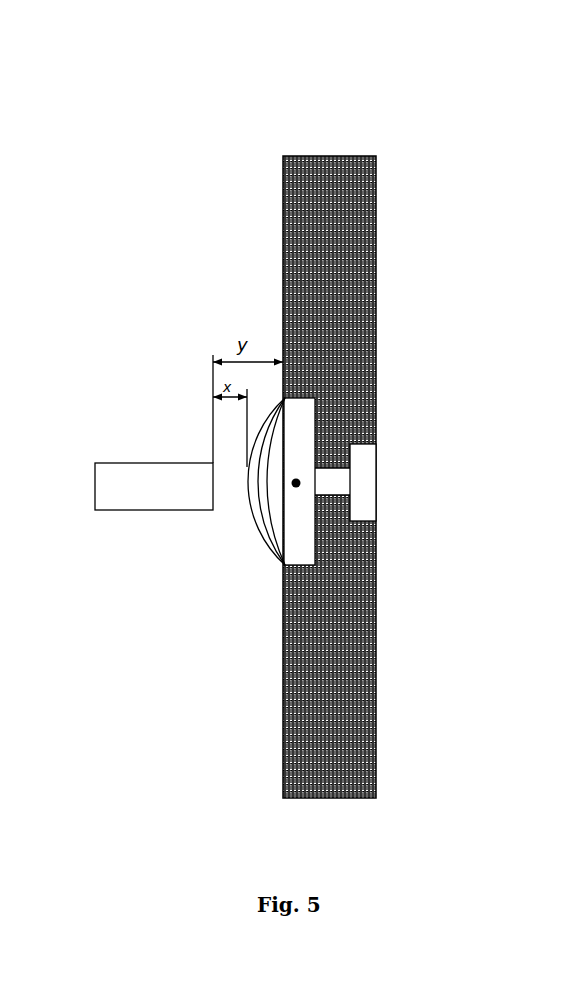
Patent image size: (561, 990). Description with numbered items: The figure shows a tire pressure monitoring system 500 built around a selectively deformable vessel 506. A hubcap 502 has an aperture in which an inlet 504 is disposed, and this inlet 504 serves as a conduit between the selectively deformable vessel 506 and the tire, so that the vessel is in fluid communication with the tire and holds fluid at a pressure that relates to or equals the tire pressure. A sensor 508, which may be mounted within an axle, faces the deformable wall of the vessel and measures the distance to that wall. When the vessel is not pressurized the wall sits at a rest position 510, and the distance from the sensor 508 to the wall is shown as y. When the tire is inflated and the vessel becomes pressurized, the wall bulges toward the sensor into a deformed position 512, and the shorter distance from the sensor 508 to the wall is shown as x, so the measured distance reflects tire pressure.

The tire pressure monitoring system 500 is at (113, 122).
The hubcap 502 is at (332, 157).
The inlet 504 is at (383, 481).
The selectively deformable vessel 506 is at (297, 482).
The sensor 508 is at (163, 510).
The rest position 510 is at (285, 491).
The deformed position 512 is at (248, 492).